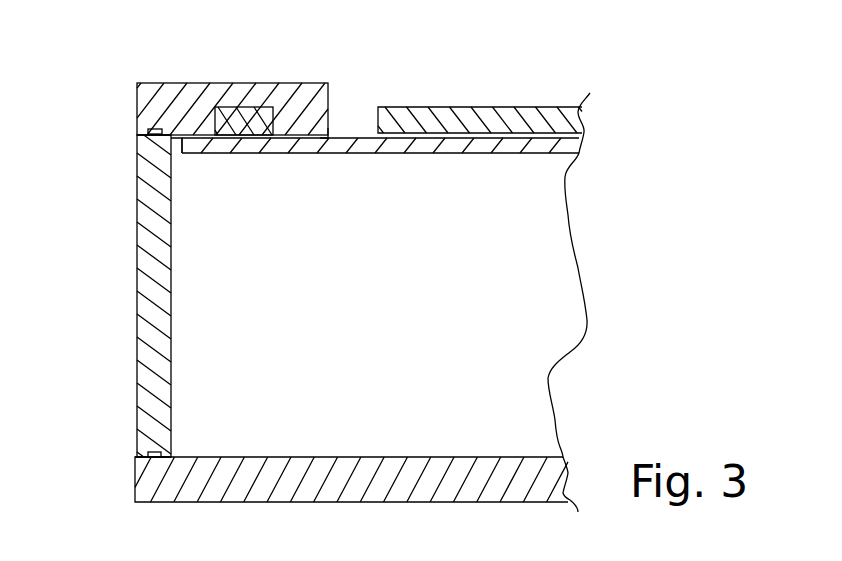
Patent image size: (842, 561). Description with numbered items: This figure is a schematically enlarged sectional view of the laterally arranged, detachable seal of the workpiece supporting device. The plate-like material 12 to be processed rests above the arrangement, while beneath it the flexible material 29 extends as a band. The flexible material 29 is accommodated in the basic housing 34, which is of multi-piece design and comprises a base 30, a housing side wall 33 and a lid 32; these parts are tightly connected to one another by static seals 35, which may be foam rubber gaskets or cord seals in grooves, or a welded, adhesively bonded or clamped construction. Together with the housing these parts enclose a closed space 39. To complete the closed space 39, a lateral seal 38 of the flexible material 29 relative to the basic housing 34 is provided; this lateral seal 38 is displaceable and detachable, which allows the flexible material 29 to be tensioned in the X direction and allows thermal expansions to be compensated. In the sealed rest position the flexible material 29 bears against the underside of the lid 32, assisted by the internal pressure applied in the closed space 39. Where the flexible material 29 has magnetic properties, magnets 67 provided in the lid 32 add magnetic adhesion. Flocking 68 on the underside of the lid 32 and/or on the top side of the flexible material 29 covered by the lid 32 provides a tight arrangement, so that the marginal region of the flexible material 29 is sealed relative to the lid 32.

The plate-like material 12 is at (492, 117).
The flexible material 29 is at (548, 145).
The base 30 is at (230, 478).
The lid 32 is at (181, 100).
The housing side wall 33 is at (156, 330).
The basic housing 34 is at (104, 470).
The static seal 35 is at (126, 135).
The lateral seal 38 is at (190, 162).
The closed space 39 is at (356, 344).
The magnet 67 is at (262, 116).
The flocking 68 is at (328, 136).